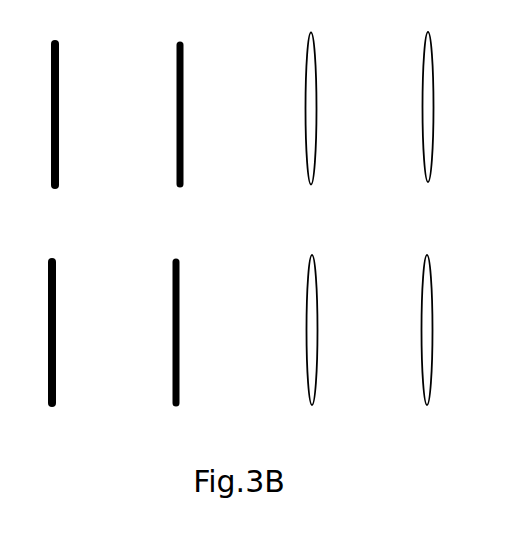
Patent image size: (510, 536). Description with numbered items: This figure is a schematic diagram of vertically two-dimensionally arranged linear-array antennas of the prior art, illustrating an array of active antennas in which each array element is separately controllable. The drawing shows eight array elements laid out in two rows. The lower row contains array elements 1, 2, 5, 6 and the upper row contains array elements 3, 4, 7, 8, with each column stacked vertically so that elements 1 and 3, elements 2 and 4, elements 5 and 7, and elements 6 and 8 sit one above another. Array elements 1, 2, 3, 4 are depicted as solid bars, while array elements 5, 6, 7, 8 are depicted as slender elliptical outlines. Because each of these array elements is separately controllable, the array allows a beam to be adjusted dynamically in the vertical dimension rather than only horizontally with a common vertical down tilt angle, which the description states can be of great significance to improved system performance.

The solid bar pattern element 1 is at (51, 354).
The solid bar pattern element 2 is at (177, 354).
The solid bar pattern element 3 is at (55, 135).
The solid bar pattern element 4 is at (180, 135).
The elliptical outline pattern element 5 is at (312, 350).
The elliptical outline pattern element 6 is at (427, 350).
The elliptical outline pattern element 7 is at (311, 127).
The elliptical outline pattern element 8 is at (428, 125).